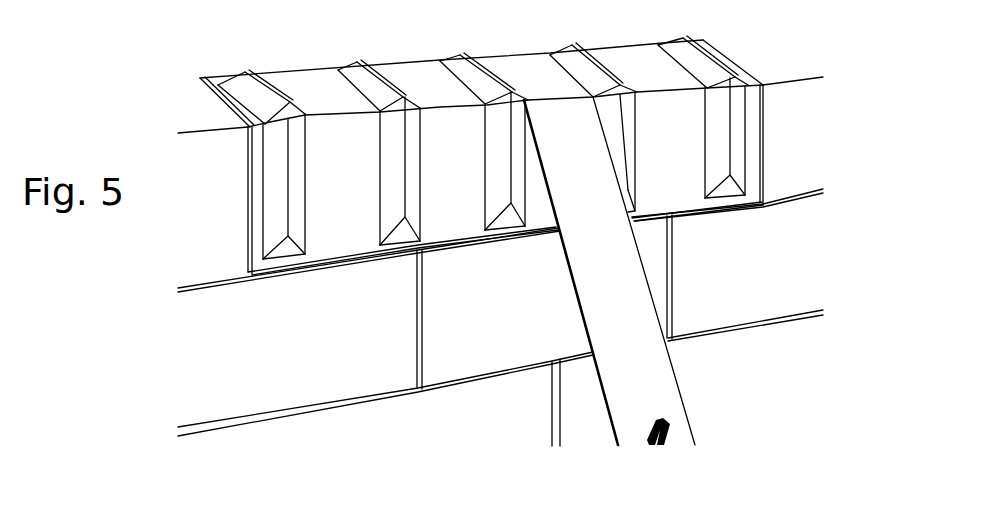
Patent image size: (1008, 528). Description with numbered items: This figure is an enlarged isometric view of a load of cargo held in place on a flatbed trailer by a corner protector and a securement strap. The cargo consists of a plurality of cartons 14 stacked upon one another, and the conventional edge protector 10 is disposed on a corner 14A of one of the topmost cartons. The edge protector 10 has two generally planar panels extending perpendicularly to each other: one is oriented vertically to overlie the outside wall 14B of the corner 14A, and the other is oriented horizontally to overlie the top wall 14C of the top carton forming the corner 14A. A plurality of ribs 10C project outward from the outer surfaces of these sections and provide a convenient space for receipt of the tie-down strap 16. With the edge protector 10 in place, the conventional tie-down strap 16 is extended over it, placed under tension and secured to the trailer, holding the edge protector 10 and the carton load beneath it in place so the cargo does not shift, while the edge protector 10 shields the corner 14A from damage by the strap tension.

The edge protector 10 is at (326, 82).
The ribs 10C is at (280, 222).
The cartons 14 is at (346, 348).
The corner 14A is at (230, 128).
The outside wall 14B is at (210, 202).
The top wall 14C is at (188, 115).
The tie-down strap 16 is at (677, 412).